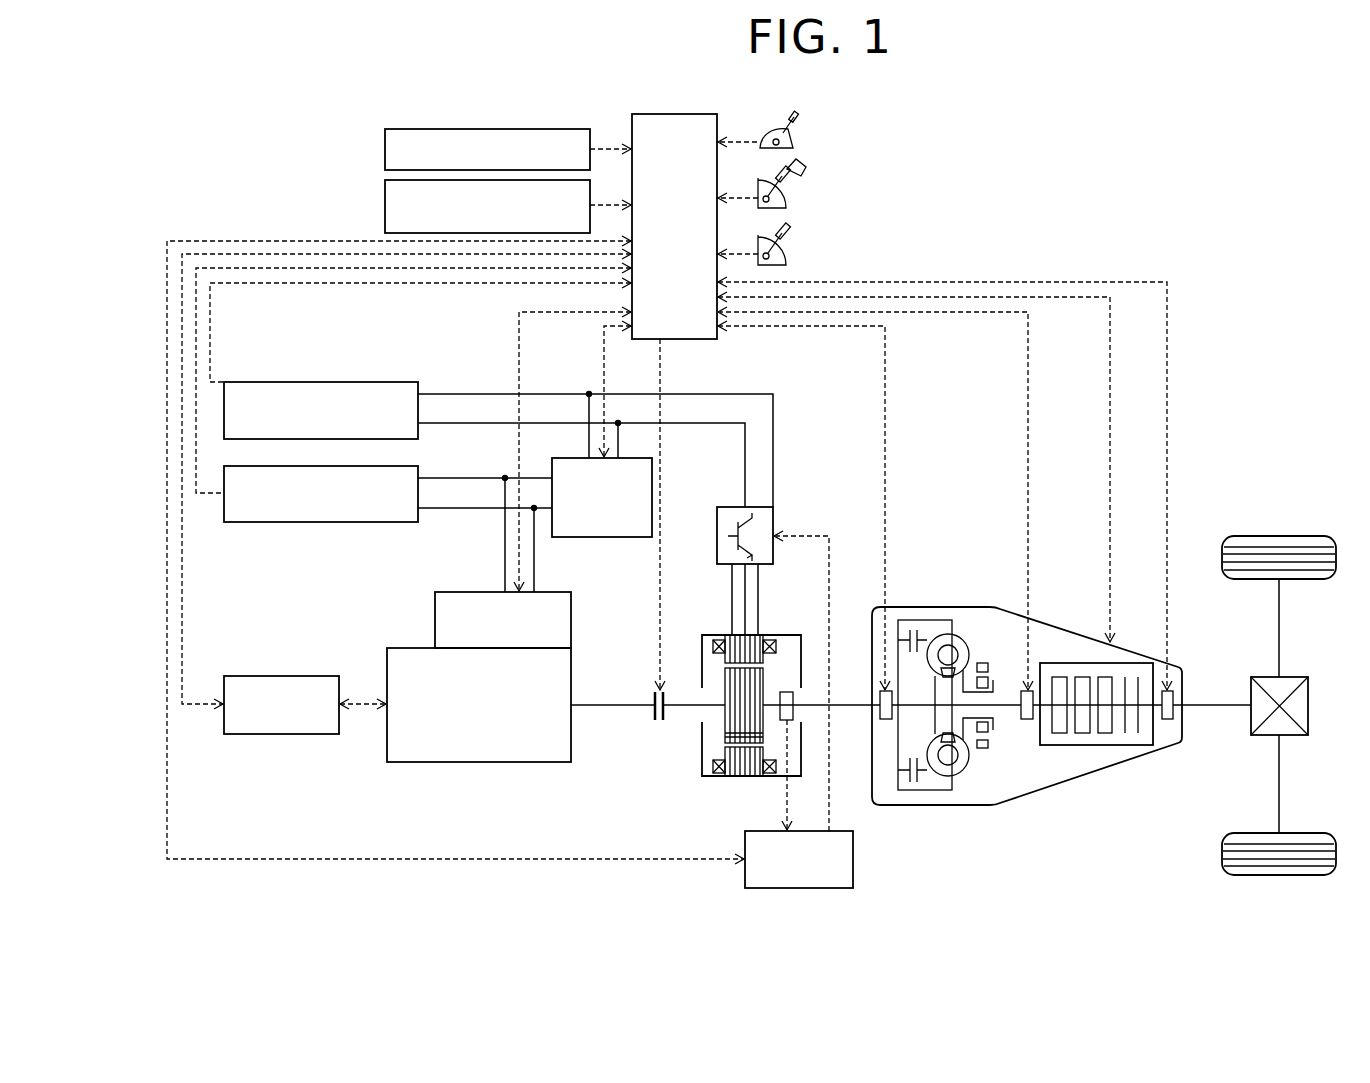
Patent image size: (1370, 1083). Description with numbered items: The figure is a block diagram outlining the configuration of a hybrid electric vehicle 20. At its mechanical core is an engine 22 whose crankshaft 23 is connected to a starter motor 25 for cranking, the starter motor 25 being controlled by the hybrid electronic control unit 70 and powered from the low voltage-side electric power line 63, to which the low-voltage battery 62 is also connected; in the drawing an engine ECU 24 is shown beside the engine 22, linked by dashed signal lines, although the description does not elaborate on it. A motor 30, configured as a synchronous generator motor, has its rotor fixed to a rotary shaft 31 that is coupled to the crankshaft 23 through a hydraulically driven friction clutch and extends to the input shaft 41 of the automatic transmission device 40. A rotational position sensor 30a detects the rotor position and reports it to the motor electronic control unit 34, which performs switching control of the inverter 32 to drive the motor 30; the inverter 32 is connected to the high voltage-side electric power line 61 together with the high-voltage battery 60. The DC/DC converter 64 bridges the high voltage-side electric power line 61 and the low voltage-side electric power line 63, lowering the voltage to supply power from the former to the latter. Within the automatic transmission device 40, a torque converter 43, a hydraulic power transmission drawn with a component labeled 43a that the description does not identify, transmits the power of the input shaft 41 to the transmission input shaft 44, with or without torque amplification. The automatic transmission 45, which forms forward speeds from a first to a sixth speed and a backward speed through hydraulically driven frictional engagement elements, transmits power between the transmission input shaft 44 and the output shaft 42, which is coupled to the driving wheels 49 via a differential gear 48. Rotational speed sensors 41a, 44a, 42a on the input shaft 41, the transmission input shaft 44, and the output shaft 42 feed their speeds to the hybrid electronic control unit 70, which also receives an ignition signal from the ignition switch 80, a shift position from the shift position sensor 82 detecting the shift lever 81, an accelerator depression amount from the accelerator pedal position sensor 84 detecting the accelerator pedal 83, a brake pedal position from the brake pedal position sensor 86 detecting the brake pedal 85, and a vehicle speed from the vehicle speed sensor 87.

The hybrid electric vehicle 20 is at (1068, 112).
The engine 22 is at (465, 763).
The crankshaft 23 is at (589, 707).
The engine ECU 24 is at (281, 675).
The starter motor 25 is at (492, 591).
The motor 30 is at (725, 634).
The rotational position sensor 30a is at (785, 688).
The rotary shaft 31 is at (688, 698).
The inverter 32 is at (722, 506).
The motor electronic control unit 34 is at (854, 870).
The automatic transmission device 40 is at (1067, 625).
The input shaft 41 is at (856, 698).
The rotational speed sensor 41a is at (885, 722).
The output shaft 42 is at (1193, 700).
The rotational speed sensor 42a is at (1167, 722).
The torque converter 43 is at (967, 627).
The lockup clutch 43a is at (920, 632).
The transmission input shaft 44 is at (1012, 703).
The rotational speed sensor 44a is at (1024, 720).
The automatic transmission 45 is at (1123, 748).
The differential gear 48 is at (1287, 677).
The driving wheels 49 is at (1278, 535).
The high-voltage battery 60 is at (362, 381).
The high voltage-side electric power line 61 is at (470, 422).
The low-voltage battery 62 is at (362, 523).
The low voltage-side electric power line 63 is at (470, 507).
The DC/DC converter 64 is at (605, 538).
The hybrid electronic control unit 70 is at (676, 113).
The ignition switch 80 is at (384, 149).
The shift lever 81 is at (805, 123).
The shift position sensor 82 is at (794, 147).
The accelerator pedal 83 is at (808, 180).
The accelerator pedal position sensor 84 is at (787, 200).
The brake pedal 85 is at (800, 233).
The brake pedal position sensor 86 is at (787, 253).
The vehicle speed sensor 87 is at (384, 205).